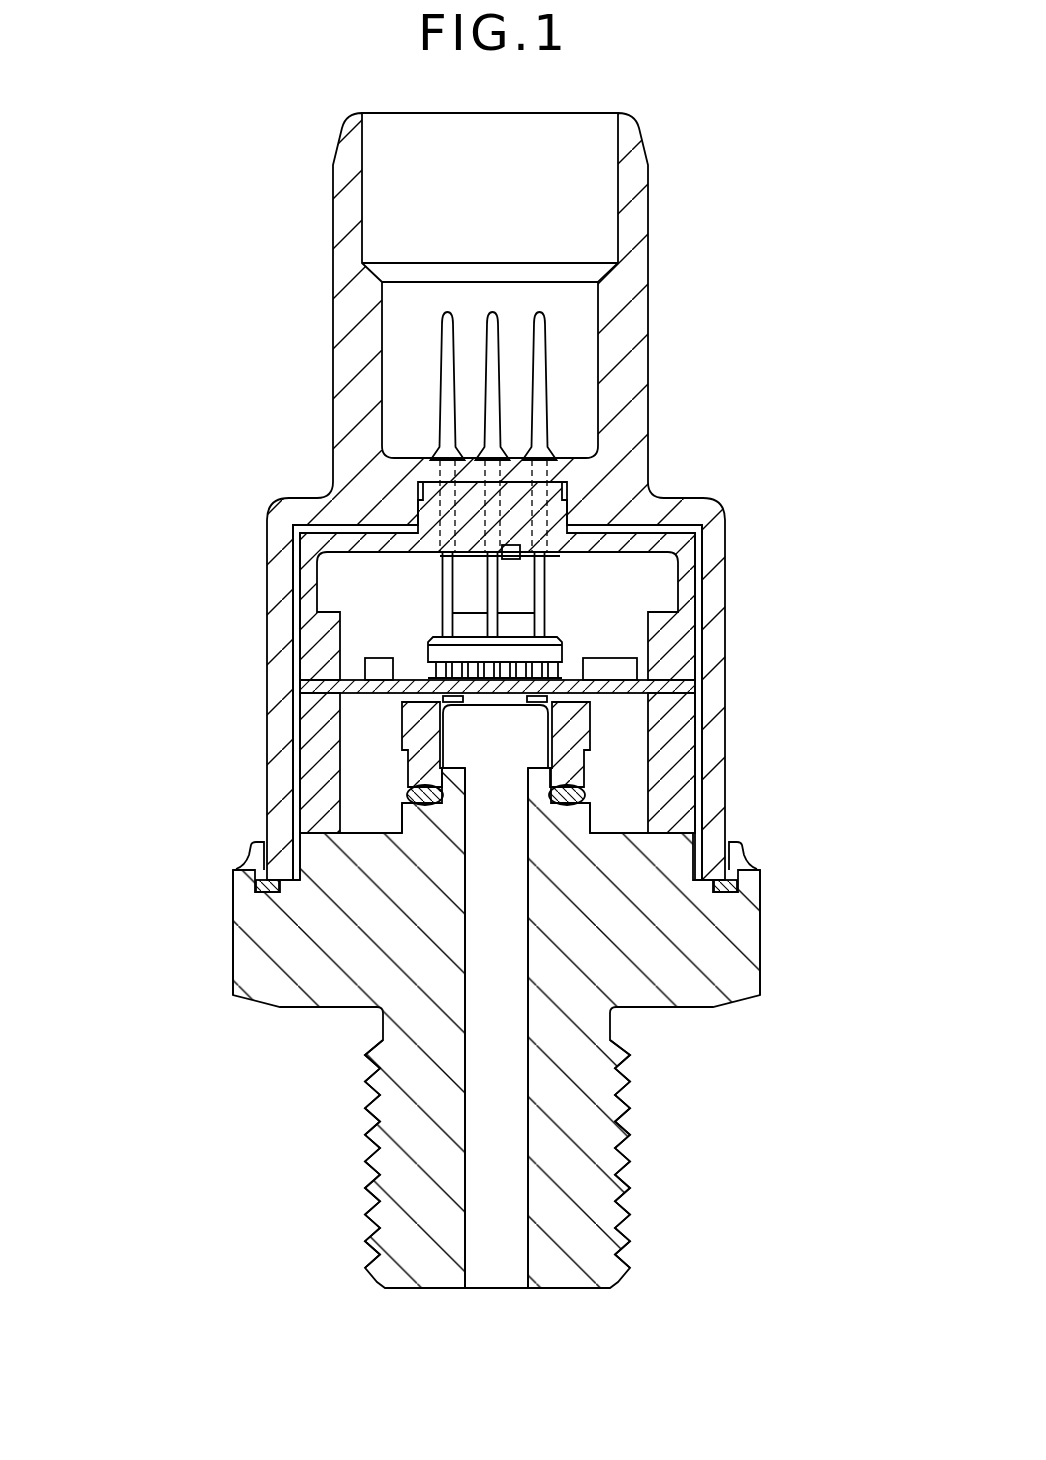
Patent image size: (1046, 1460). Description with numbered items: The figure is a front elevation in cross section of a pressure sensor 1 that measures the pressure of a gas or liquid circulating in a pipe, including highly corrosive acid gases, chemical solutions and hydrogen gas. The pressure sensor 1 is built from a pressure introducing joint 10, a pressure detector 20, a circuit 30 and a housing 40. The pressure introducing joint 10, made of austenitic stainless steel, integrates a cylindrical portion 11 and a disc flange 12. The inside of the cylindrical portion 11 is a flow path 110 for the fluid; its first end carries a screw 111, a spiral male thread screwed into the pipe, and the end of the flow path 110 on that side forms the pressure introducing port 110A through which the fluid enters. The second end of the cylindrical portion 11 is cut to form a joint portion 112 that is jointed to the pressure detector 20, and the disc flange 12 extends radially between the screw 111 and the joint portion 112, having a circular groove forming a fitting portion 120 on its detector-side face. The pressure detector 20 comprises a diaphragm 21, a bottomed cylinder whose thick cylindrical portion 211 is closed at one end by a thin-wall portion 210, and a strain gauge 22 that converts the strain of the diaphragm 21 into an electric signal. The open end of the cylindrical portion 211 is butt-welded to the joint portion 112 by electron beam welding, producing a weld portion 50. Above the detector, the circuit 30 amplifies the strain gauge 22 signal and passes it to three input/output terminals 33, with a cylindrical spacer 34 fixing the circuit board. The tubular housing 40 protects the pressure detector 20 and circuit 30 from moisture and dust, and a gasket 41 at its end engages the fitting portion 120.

The pressure sensor 1 is at (150, 322).
The pressure introducing joint 10 is at (622, 1293).
The cylindrical portion 11 is at (417, 1265).
The disc flange 12 is at (747, 975).
The pressure detector 20 is at (597, 742).
The diaphragm 21 is at (565, 712).
The strain gauge 22 is at (452, 690).
The circuit 30 is at (570, 650).
The input/output terminal 33 is at (543, 393).
The spacer 34 is at (307, 622).
The housing 40 is at (352, 426).
The gasket 41 is at (238, 871).
The weld portion 50 is at (398, 795).
The flow path 110 is at (468, 1258).
The pressure introducing port 110A is at (518, 1290).
The screw 111 is at (372, 1229).
The joint portion 112 is at (443, 822).
The fitting portion 120 is at (280, 898).
The thin-wall portion 210 is at (478, 708).
The cylindrical portion 211 is at (585, 773).